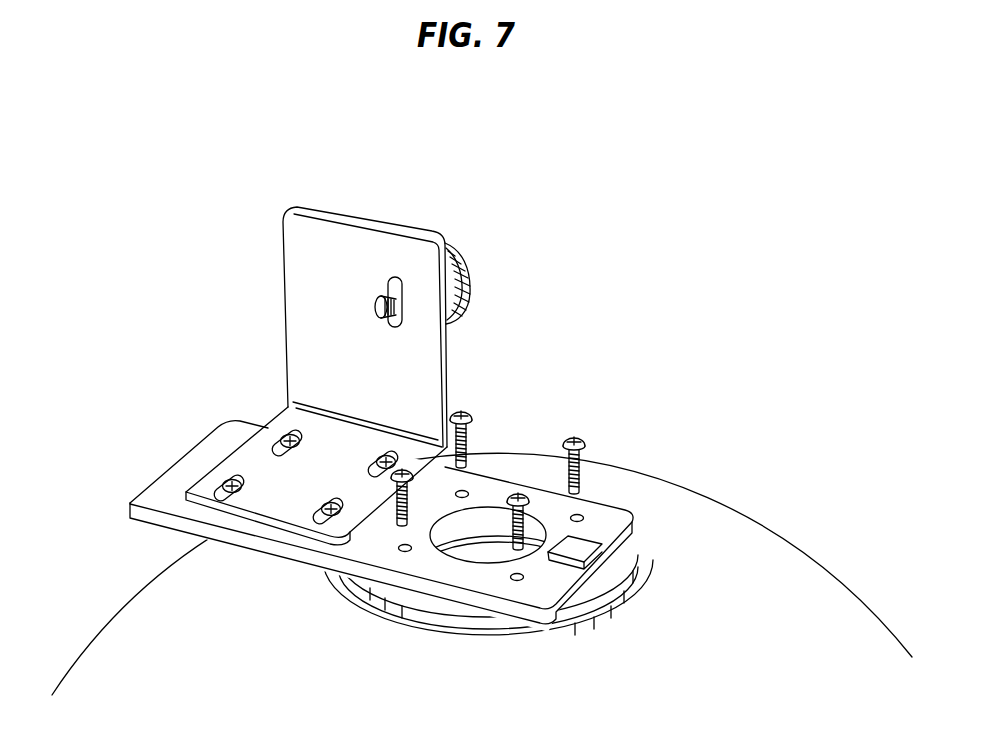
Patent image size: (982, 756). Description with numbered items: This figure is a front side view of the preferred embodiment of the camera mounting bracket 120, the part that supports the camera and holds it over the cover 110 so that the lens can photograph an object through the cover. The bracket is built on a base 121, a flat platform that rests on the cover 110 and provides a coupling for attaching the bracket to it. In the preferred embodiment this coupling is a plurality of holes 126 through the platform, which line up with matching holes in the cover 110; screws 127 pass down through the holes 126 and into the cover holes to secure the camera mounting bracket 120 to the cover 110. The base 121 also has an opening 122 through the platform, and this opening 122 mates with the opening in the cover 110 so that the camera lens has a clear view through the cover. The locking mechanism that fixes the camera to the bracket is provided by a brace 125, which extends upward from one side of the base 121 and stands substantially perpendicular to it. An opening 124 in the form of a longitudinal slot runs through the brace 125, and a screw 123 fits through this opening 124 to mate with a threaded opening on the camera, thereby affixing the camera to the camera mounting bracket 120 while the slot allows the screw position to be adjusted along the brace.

The cover 110 is at (752, 540).
The camera mounting bracket 120 is at (578, 296).
The base 121 is at (617, 513).
The opening 122 is at (488, 522).
The screw 123 is at (398, 308).
The opening 124 is at (391, 279).
The brace 125 is at (308, 287).
The holes 126 is at (398, 549).
The screws 127 is at (467, 412).